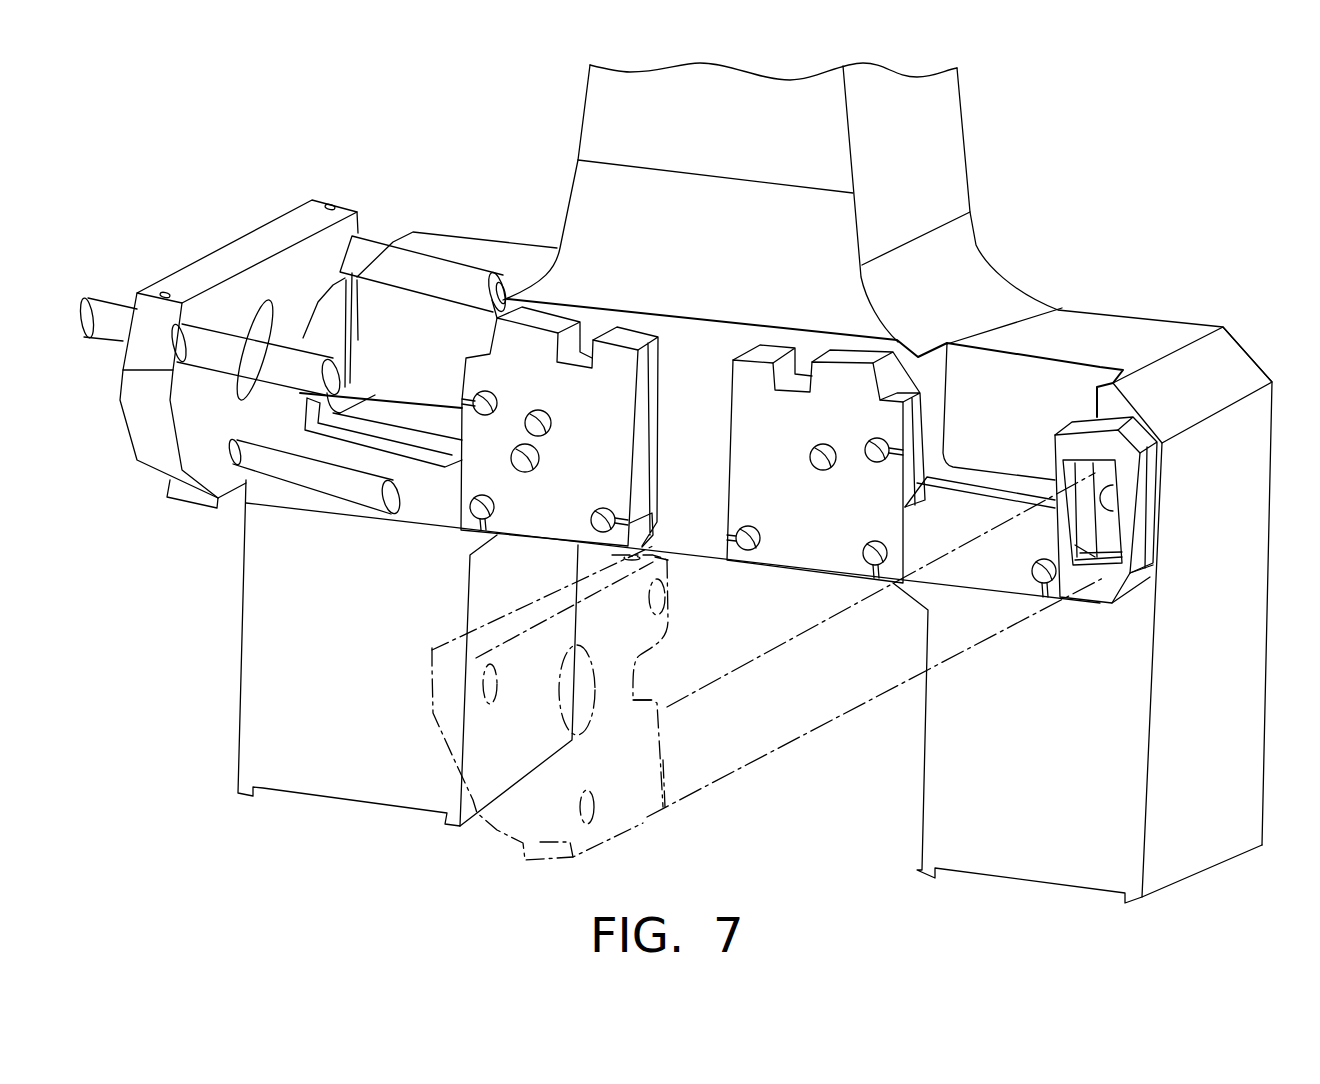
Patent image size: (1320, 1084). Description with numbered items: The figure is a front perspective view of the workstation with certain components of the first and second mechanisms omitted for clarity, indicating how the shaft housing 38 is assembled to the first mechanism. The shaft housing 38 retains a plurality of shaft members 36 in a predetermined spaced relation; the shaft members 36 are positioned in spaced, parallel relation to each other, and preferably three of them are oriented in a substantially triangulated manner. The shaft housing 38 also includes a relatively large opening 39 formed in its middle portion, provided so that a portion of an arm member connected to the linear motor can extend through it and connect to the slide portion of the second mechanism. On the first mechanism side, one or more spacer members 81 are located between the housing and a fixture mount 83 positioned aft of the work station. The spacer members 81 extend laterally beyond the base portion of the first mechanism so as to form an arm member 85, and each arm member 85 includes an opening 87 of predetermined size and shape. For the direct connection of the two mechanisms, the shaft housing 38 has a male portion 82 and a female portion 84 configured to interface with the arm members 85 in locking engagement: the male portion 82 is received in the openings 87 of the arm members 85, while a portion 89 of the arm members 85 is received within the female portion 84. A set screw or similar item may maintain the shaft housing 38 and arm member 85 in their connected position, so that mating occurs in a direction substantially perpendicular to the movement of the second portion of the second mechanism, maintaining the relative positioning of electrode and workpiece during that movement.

The shaft members 36 is at (448, 277).
The shaft housing 38 is at (223, 253).
The opening 39 is at (260, 293).
The spacer members 81 is at (748, 377).
The male portion 82 is at (652, 750).
The fixture mount 83 is at (606, 118).
The female portion 84 is at (643, 644).
The arm members 85 is at (433, 510).
The opening 87 is at (1122, 593).
The portion of arm members 89 is at (1067, 447).